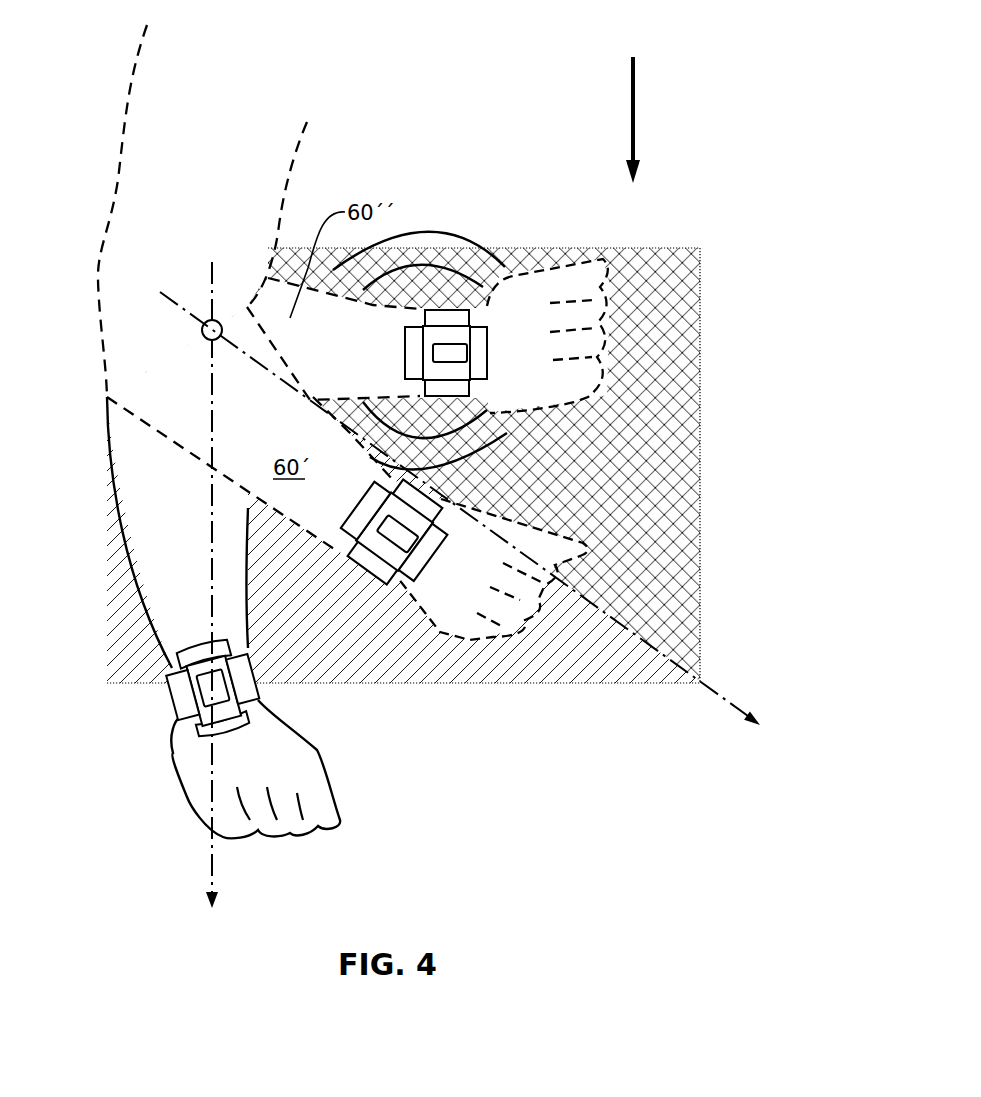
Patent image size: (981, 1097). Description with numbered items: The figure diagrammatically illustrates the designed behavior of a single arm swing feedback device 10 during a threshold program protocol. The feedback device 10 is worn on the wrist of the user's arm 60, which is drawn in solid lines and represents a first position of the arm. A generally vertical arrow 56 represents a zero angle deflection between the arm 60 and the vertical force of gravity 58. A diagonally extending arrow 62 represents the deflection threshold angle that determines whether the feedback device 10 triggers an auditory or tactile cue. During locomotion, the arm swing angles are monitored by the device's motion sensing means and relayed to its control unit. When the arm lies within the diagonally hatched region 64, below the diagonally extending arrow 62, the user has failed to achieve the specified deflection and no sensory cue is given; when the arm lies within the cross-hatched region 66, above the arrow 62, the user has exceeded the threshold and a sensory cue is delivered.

The feedback device 10 is at (423, 346).
The generally vertical arrow 56 is at (210, 565).
The vertical force of gravity 58 is at (628, 107).
The arm 60 is at (130, 487).
The diagonally extending arrow 62 is at (713, 690).
The diagonally hatched region 64 is at (335, 665).
The cross-hatched region 66 is at (678, 505).